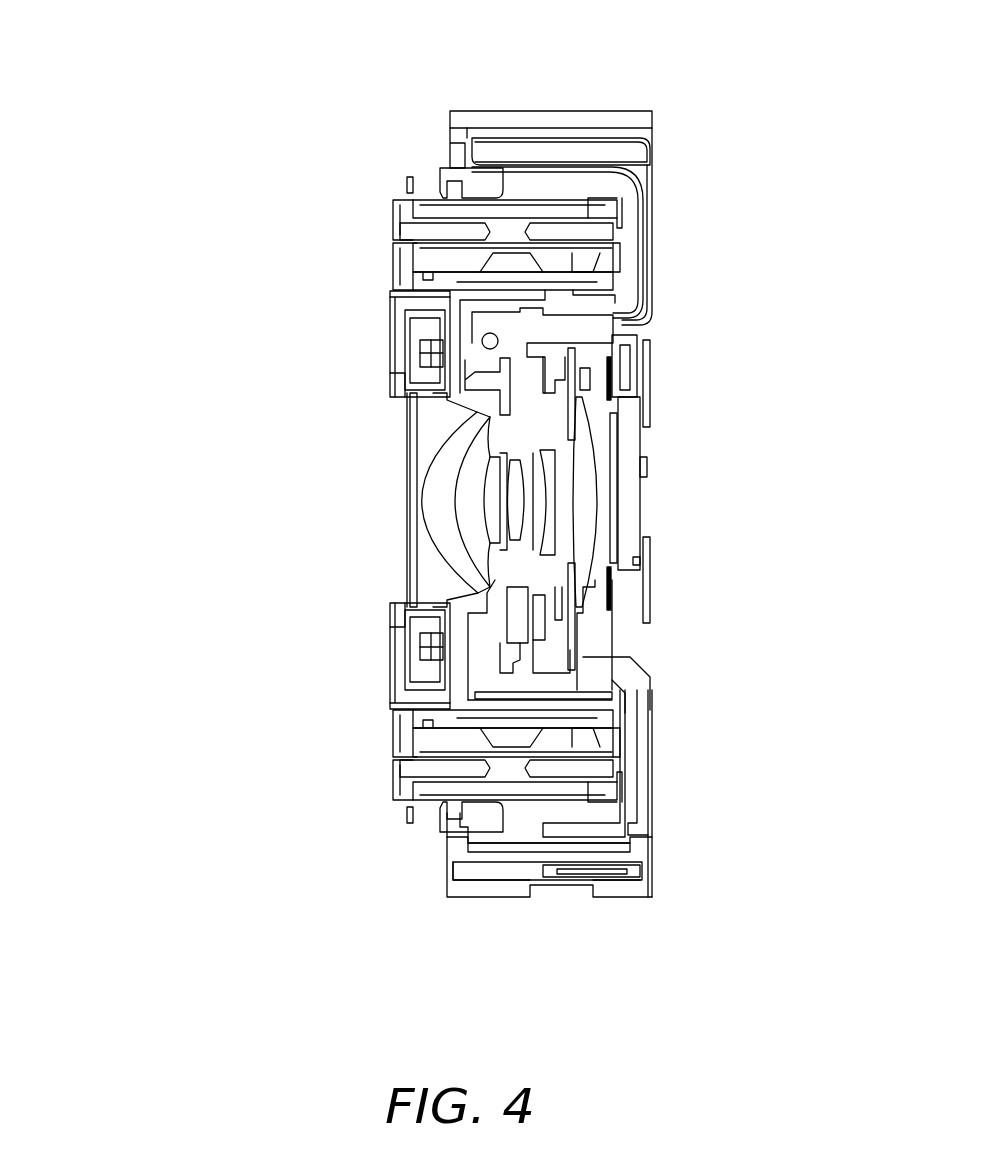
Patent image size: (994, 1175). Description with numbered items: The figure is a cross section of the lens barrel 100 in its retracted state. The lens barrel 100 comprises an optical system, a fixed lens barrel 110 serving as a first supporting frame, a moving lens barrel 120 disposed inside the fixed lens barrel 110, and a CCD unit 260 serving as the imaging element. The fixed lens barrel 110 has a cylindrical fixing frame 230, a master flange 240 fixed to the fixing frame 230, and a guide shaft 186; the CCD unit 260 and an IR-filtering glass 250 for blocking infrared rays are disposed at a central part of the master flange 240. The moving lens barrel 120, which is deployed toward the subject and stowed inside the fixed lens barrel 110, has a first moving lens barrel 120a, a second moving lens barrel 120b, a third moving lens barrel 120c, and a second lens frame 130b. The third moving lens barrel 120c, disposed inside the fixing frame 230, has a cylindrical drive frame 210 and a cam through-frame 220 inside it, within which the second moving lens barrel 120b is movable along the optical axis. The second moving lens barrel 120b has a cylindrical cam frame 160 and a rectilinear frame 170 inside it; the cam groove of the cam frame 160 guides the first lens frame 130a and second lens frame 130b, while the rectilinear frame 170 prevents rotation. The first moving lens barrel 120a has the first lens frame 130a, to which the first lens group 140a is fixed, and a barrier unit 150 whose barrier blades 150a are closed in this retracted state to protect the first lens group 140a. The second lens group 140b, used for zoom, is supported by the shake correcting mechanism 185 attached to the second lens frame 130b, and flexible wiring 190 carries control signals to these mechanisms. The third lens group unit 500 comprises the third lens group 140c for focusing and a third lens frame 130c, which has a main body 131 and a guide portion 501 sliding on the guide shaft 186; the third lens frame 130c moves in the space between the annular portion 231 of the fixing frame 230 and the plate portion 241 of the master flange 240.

The lens barrel 100 is at (674, 109).
The fixed lens barrel 110 is at (630, 53).
The fixing frame 230 is at (500, 120).
The master flange 240 is at (592, 150).
The flexible wiring 190 is at (643, 238).
The moving lens barrel 120 is at (105, 163).
The first moving lens barrel 120a is at (210, 300).
The second moving lens barrel 120b is at (210, 220).
The third moving lens barrel 120c is at (210, 132).
The drive frame 210 is at (430, 212).
The cam through-frame 220 is at (417, 231).
The cam frame 160 is at (422, 257).
The rectilinear frame 170 is at (430, 280).
The first lens frame 130a is at (457, 322).
The barrier unit 150 is at (406, 347).
The second lens frame 130b is at (617, 329).
The barrier blades 150a is at (403, 460).
The first lens group 140a is at (417, 542).
The second lens group 140b is at (483, 531).
The third lens group 140c is at (583, 567).
The third lens frame 130c is at (594, 644).
The third lens group unit 500 is at (772, 597).
The IR-filtering glass 250 is at (620, 541).
The CCD unit 260 is at (633, 510).
The shake correcting mechanism 185 is at (518, 667).
The main body 131 is at (637, 760).
The annular portion 231 is at (452, 870).
The plate portion 241 is at (648, 870).
The guide shaft 186 is at (504, 861).
The guide portion 501 is at (597, 873).